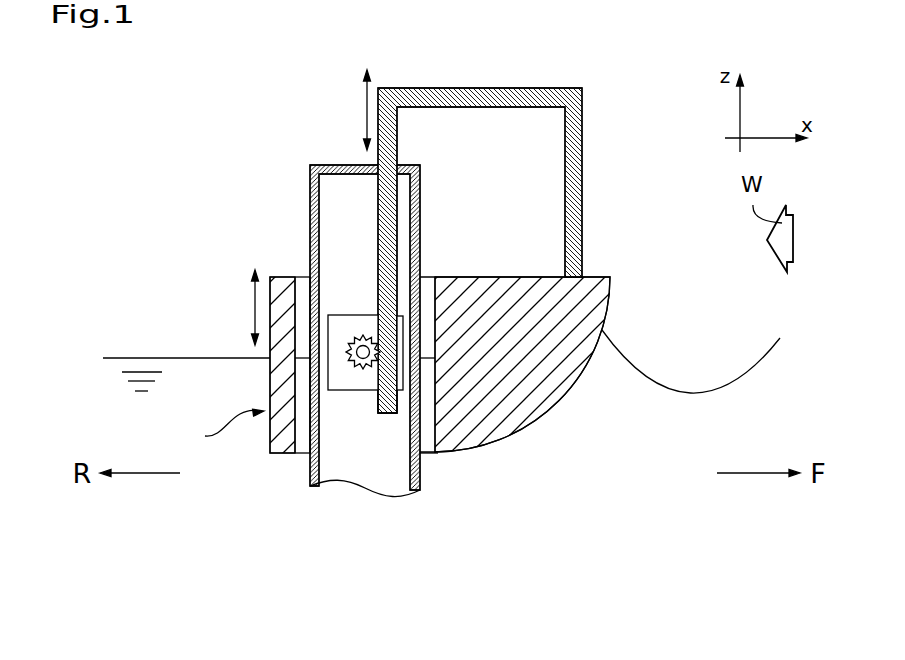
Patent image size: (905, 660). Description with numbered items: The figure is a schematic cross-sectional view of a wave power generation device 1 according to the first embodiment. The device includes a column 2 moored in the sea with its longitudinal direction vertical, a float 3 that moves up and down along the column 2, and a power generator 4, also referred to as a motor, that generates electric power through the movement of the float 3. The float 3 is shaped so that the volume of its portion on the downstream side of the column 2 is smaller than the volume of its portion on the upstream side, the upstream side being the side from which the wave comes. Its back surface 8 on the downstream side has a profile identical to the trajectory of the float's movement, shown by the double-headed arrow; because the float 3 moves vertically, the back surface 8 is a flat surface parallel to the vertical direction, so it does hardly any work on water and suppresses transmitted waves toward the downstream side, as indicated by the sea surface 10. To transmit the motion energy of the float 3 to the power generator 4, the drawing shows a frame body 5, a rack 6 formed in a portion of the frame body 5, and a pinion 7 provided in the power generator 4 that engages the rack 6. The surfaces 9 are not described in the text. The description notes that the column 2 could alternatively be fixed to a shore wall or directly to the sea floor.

The wave power generation device 1 is at (127, 120).
The column 2 is at (311, 180).
The float 3 is at (275, 277).
The power generator 4 is at (350, 315).
The frame body 5 is at (473, 106).
The rack 6 is at (379, 405).
The pinion 7 is at (356, 363).
The back surface 8 is at (224, 431).
The sliding surface 9 is at (273, 453).
The sea surface 10 is at (147, 358).